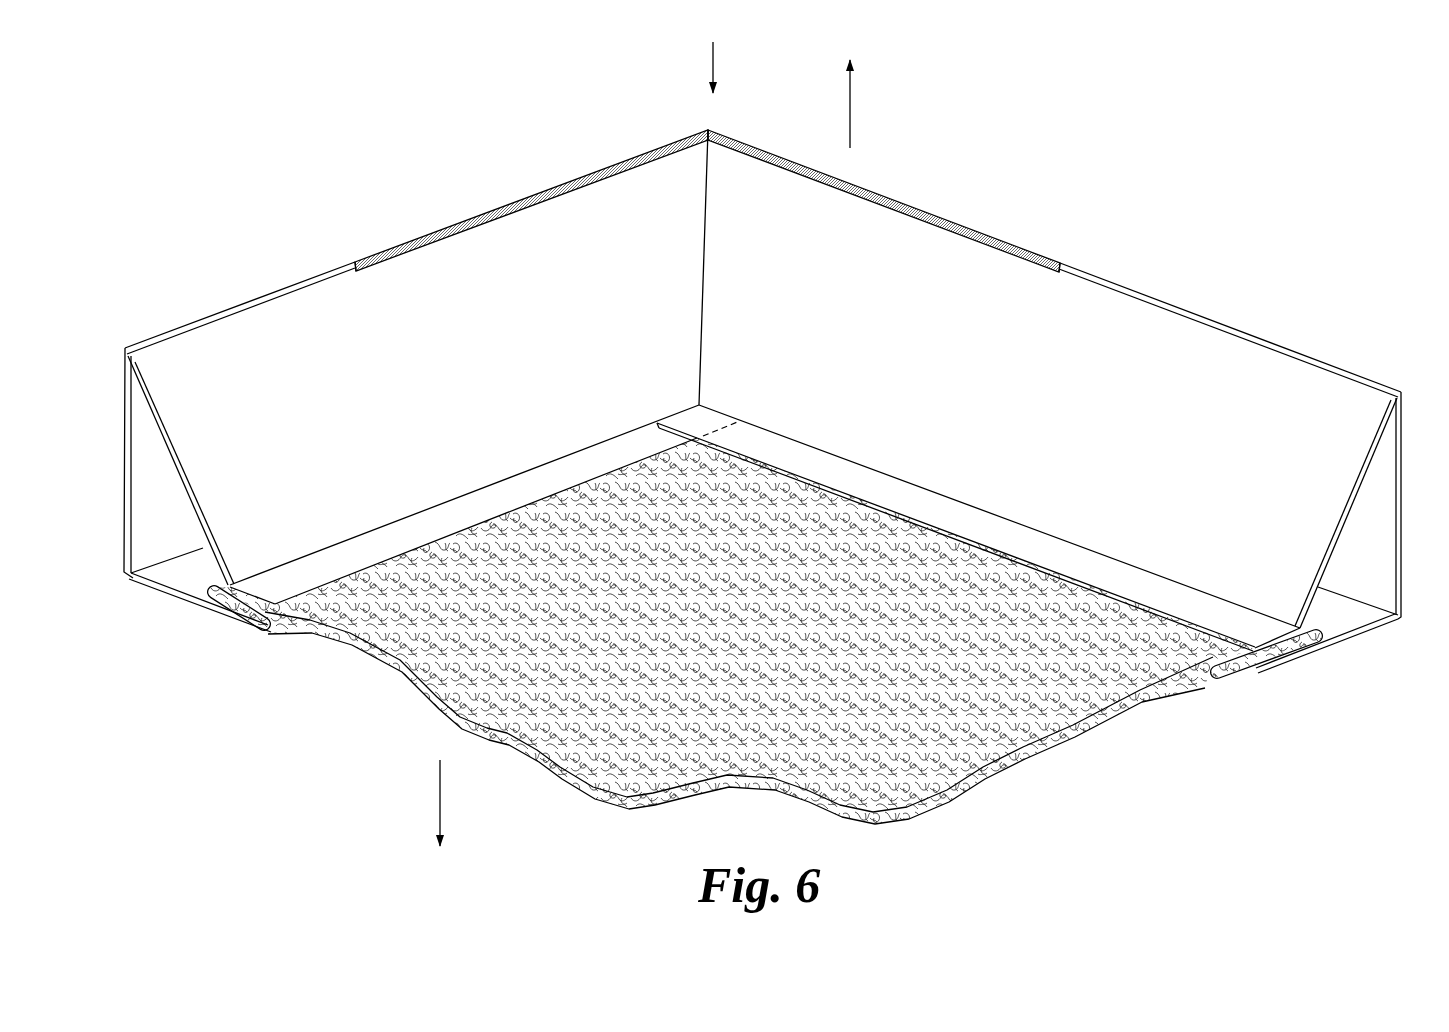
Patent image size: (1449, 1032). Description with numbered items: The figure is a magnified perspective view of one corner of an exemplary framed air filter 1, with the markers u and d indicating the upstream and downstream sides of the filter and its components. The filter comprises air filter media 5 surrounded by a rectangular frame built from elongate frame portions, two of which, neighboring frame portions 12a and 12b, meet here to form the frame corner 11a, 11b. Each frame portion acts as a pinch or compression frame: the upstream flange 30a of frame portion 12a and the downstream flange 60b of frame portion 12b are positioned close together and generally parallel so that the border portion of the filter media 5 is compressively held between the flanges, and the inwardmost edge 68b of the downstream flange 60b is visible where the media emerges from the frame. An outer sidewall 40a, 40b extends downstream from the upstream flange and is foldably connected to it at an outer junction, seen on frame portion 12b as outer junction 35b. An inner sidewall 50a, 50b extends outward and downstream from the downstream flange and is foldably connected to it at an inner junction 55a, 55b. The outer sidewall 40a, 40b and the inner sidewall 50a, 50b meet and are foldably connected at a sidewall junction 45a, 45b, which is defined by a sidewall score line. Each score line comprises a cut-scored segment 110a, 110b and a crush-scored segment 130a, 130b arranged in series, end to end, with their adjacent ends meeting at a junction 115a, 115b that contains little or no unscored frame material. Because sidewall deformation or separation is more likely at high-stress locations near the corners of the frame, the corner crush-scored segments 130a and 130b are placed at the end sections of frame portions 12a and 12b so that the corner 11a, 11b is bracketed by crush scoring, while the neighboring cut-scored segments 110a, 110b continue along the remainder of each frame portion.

The framed air filter 1 is at (222, 116).
The air filter media 5 is at (752, 758).
The frame corner 11a is at (712, 56).
The frame corner 11b is at (720, 55).
The frame portion 12a is at (344, 193).
The frame portion 12b is at (1096, 198).
The upstream flange 30a is at (182, 598).
The outer junction 35b is at (1406, 625).
The outer sidewall 40a is at (115, 383).
The outer sidewall 40b is at (1410, 432).
The sidewall junction 45a is at (257, 292).
The sidewall junction 45b is at (1157, 295).
The inner sidewall 50a is at (453, 420).
The inner sidewall 50b is at (1008, 420).
The inner junction 55a is at (293, 558).
The inner junction 55b is at (1233, 600).
The downstream flange 60b is at (1137, 582).
The inwardmost edge of downstream flange 68b is at (1203, 632).
The cut-scored segment 110a is at (178, 330).
The cut-scored segment 110b is at (1313, 357).
The junction 115a is at (362, 268).
The junction 115b is at (1062, 268).
The corner crush-scored segment 130a is at (522, 190).
The corner crush-scored segment 130b is at (920, 198).
The downstream marker d is at (853, 112).
The upstream marker u is at (442, 793).